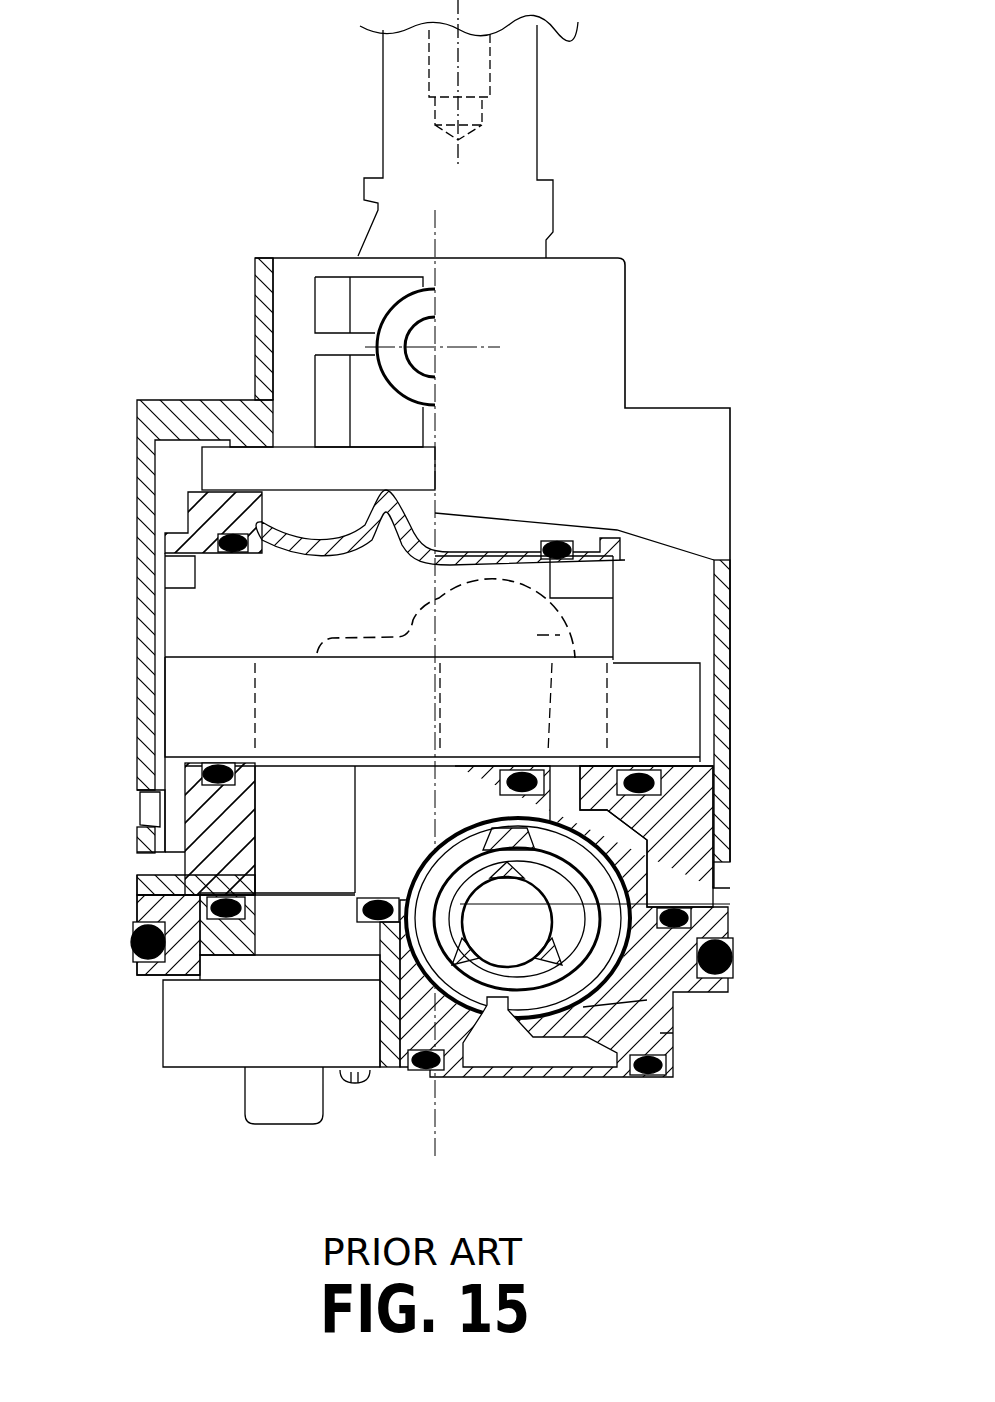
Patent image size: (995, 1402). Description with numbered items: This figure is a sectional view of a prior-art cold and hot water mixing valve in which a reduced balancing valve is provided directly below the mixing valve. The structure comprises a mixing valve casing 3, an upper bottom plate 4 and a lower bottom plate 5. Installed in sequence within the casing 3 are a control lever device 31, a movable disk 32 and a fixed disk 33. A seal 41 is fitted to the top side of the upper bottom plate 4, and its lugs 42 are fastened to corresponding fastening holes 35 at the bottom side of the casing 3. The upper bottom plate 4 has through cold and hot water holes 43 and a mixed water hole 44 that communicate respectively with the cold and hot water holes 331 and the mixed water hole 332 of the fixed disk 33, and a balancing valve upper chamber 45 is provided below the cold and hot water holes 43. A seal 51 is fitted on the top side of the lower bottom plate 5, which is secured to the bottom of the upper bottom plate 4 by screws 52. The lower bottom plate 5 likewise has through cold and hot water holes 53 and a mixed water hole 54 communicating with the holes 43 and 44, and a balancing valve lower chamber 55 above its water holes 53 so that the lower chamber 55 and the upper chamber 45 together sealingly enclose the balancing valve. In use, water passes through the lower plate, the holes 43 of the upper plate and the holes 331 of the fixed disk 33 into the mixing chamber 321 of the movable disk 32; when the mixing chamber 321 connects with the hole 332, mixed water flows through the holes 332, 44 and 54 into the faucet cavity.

The mixing valve casing 3 is at (722, 686).
The control lever device 31 is at (335, 472).
The movable disk 32 is at (507, 575).
The mixing chamber 321 is at (578, 632).
The fixed disk 33 is at (630, 690).
The cold and hot water holes 331 is at (577, 717).
The mixed water hole 332 is at (315, 690).
The fastening holes 35 is at (143, 800).
The upper bottom plate 4 is at (688, 845).
The seal 41 is at (218, 760).
The lugs 42 is at (158, 817).
The cold and hot water holes 43 is at (615, 840).
The mixed water hole 44 is at (228, 898).
The balancing valve upper chamber 45 is at (440, 790).
The lower bottom plate 5 is at (655, 1020).
The seal 51 is at (348, 882).
The screws 52 is at (340, 1085).
The cold and hot water holes 53 is at (555, 1050).
The mixed water hole 54 is at (297, 935).
The balancing valve lower chamber 55 is at (413, 1007).